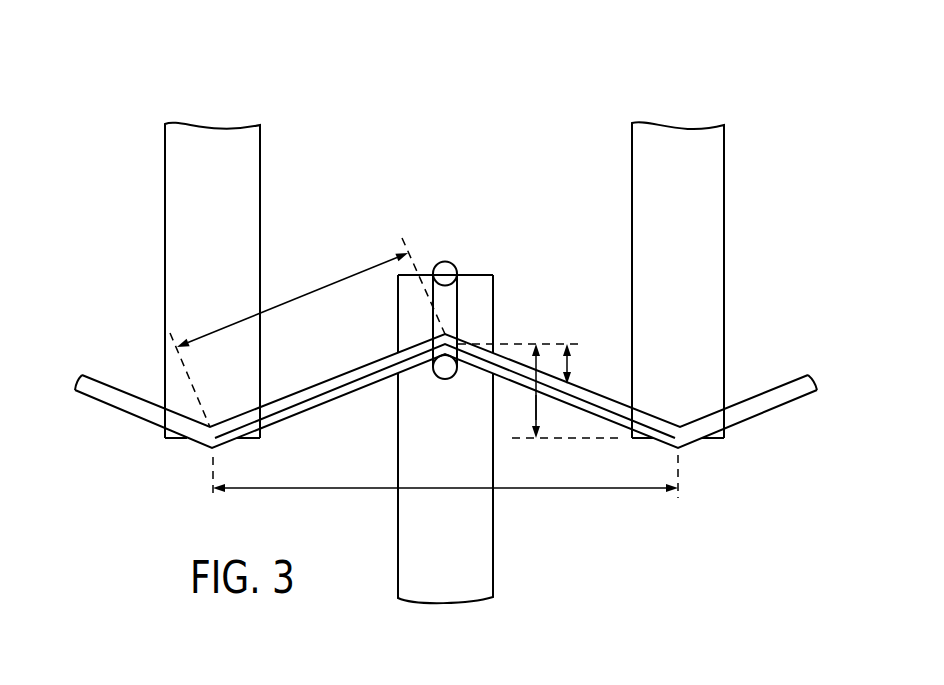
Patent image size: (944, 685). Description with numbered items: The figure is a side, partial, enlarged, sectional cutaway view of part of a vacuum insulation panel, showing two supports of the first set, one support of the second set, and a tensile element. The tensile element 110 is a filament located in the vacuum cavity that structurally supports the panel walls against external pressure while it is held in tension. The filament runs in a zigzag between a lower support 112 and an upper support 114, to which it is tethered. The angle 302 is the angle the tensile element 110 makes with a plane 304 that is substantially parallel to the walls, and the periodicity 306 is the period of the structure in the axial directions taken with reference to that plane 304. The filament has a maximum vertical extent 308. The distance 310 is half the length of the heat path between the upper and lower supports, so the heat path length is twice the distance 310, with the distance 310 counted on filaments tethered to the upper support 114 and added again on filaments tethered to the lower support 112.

The tensile element 110 is at (110, 395).
The support 112 is at (712, 167).
The support 114 is at (475, 523).
The angle θ 302 is at (568, 368).
The plane 304 is at (536, 340).
The periodicity λ 306 is at (320, 487).
The maximum vertical extent h 308 is at (536, 408).
The distance 310 is at (313, 291).